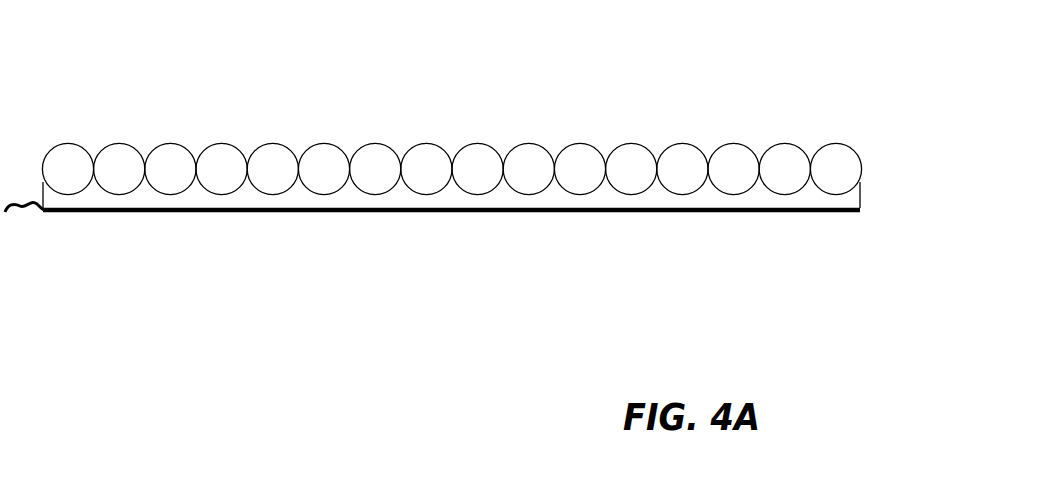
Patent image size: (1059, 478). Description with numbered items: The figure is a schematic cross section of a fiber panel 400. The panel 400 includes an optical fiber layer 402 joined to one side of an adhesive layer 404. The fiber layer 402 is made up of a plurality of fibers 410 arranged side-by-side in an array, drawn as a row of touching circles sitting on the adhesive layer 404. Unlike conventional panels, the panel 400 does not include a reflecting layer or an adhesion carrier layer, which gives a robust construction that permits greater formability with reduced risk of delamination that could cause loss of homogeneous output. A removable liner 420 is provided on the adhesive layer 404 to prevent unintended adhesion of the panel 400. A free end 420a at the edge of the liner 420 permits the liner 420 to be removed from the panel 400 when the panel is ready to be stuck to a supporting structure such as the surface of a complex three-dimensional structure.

The panel 400 is at (141, 52).
The optical fiber layer 402 is at (851, 143).
The adhesive layer 404 is at (861, 196).
The fibers 410 is at (172, 149).
The removable liner 420 is at (468, 215).
The free end 420a is at (28, 216).